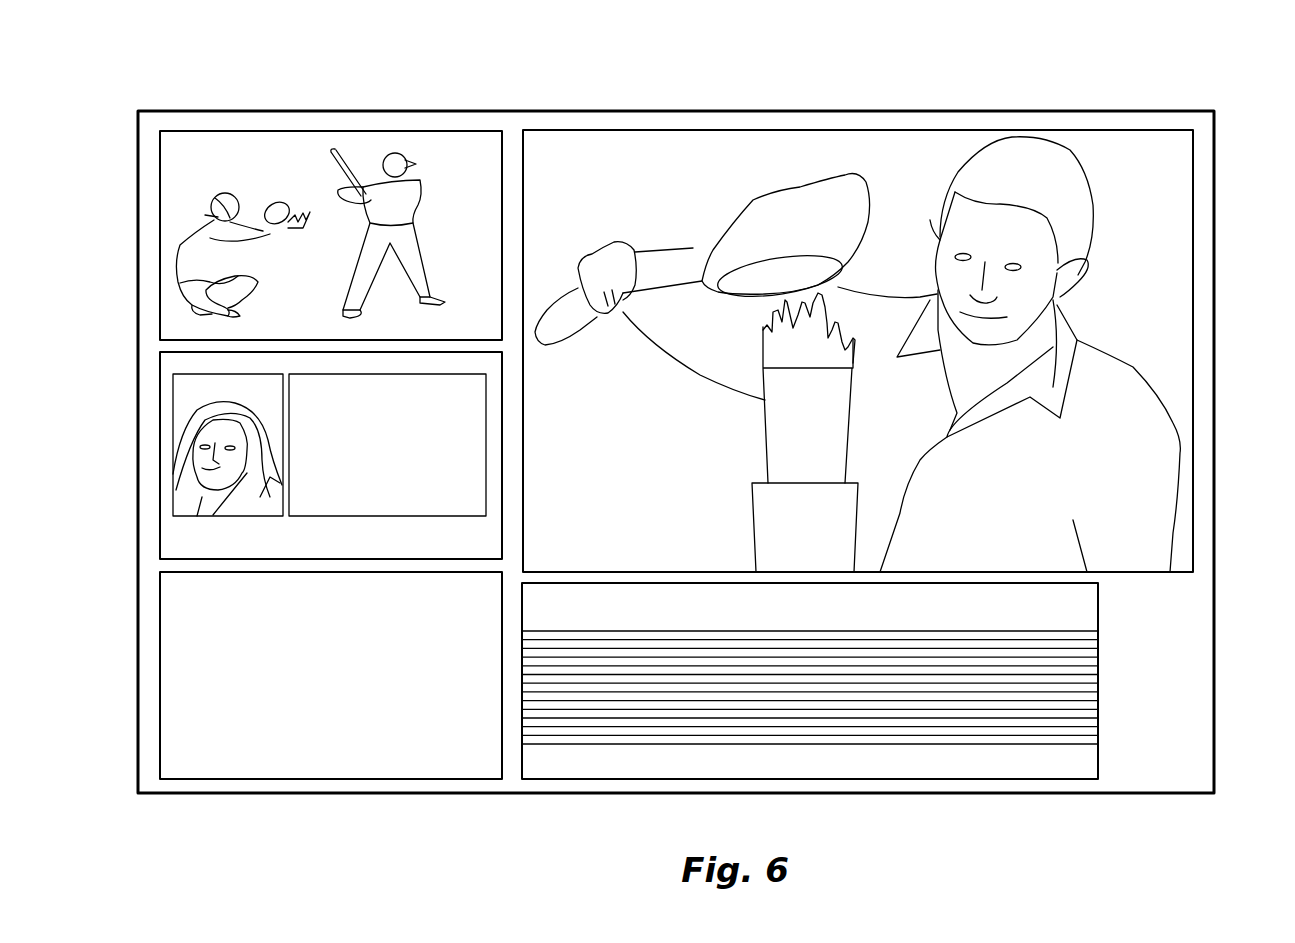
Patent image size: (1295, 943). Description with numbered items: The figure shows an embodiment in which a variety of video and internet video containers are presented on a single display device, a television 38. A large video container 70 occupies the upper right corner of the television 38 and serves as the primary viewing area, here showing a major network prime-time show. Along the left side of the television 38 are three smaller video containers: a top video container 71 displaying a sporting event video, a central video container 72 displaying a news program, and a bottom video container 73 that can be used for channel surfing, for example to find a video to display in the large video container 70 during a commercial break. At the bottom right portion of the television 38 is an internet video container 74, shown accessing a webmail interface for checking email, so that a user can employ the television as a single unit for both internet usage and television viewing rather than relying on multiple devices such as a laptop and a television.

The television 38 is at (1216, 330).
The large video container 70 is at (1160, 143).
The top video container 71 is at (172, 246).
The central video container 72 is at (172, 413).
The bottom video container 73 is at (172, 656).
The internet video container 74 is at (668, 767).